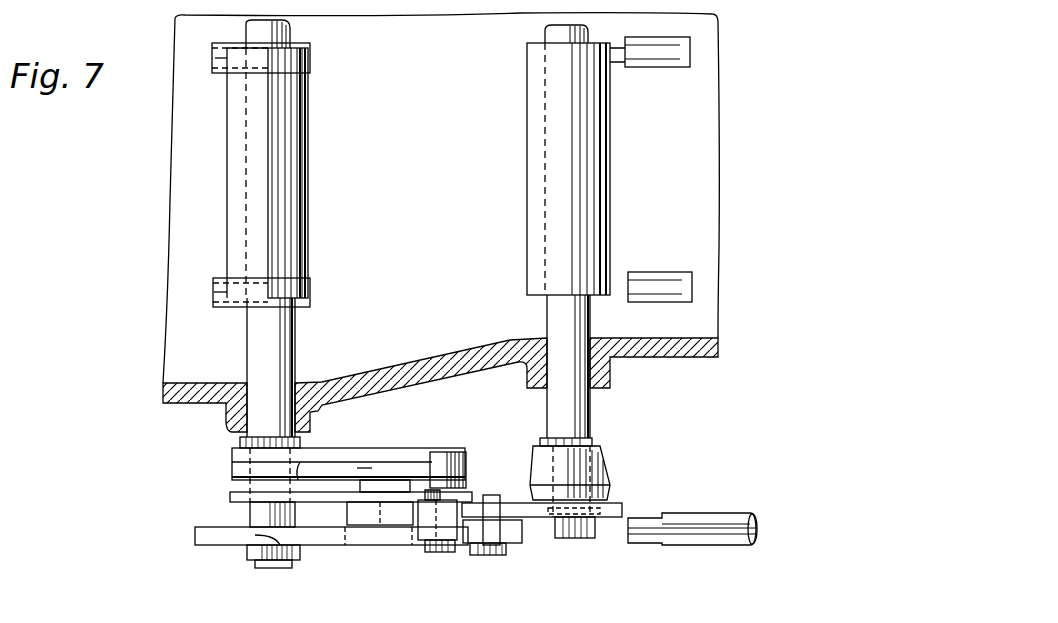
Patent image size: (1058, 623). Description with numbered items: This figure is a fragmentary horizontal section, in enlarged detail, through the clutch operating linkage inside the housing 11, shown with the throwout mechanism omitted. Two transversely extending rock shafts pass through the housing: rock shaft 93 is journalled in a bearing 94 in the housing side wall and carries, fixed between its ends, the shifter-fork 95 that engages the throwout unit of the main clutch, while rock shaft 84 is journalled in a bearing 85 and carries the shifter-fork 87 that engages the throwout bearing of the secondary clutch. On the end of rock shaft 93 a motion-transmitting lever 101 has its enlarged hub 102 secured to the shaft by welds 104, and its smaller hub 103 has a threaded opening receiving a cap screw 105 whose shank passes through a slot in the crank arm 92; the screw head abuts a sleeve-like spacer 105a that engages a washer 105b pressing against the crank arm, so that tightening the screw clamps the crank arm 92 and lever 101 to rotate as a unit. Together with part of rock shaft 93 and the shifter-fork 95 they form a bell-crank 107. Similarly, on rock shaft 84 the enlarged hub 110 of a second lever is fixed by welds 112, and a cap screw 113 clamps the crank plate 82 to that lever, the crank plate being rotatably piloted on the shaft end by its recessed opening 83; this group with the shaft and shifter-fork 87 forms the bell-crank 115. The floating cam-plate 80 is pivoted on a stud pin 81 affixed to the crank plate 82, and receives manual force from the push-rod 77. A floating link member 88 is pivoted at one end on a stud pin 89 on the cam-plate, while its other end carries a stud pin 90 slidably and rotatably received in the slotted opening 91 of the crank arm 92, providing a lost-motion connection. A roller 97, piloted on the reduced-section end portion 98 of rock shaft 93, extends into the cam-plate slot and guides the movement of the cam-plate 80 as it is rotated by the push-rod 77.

The housing 11 is at (680, 357).
The push-rod 77 is at (700, 540).
The floating cam-plate 80 is at (210, 540).
The stud pin 81 is at (493, 555).
The crank plate 82 is at (525, 517).
The recessed opening 83 is at (540, 510).
The rock shaft 84 is at (550, 318).
The bearing 85 is at (605, 380).
The shifter-fork 87 is at (527, 267).
The floating link member 88 is at (347, 513).
The stud pin 89 is at (372, 545).
The stud pin 90 is at (398, 492).
The slotted opening 91 is at (382, 485).
The crank arm 92 is at (235, 497).
The rock shaft 93 is at (277, 340).
The bearing 94 is at (235, 418).
The shifter-fork 95 is at (300, 238).
The roller 97 is at (300, 538).
The reduced-section end portion 98 is at (268, 537).
The motion-transmitting lever 101 is at (357, 468).
The enlarged hub 102 is at (232, 463).
The smaller hub 103 is at (462, 462).
The welds 104 is at (385, 446).
The cap screw 105 is at (433, 552).
The sleeve-like spacer 105a is at (418, 545).
The washer 105b is at (416, 512).
The bell-crank 107 is at (214, 491).
The enlarged hub 110 is at (606, 460).
The welds 112 is at (595, 437).
The cap screw 113 is at (580, 538).
The bell-crank 115 is at (624, 467).